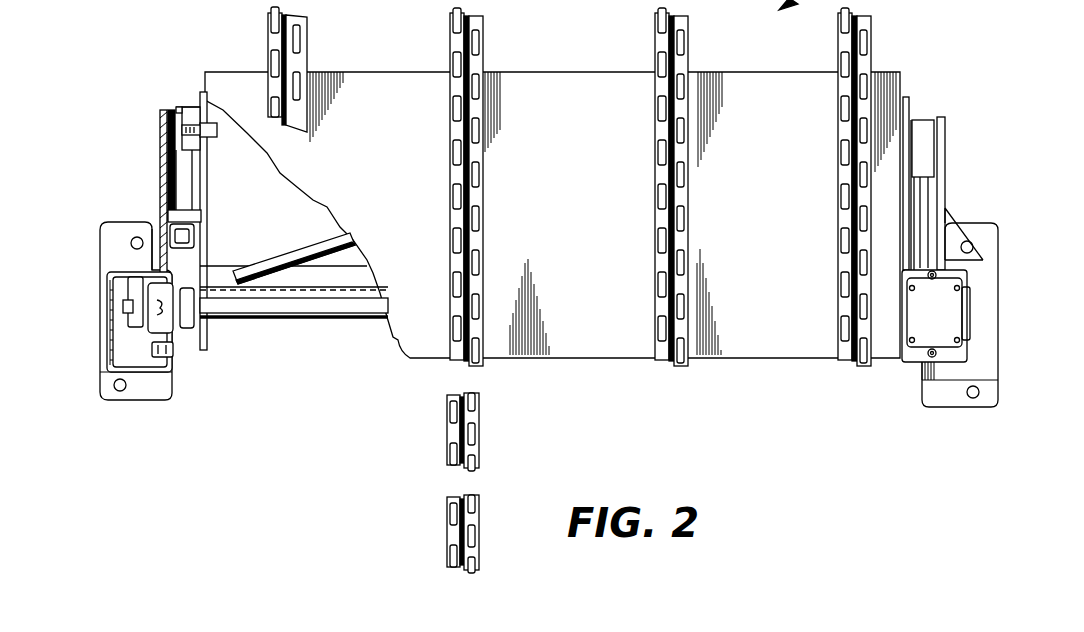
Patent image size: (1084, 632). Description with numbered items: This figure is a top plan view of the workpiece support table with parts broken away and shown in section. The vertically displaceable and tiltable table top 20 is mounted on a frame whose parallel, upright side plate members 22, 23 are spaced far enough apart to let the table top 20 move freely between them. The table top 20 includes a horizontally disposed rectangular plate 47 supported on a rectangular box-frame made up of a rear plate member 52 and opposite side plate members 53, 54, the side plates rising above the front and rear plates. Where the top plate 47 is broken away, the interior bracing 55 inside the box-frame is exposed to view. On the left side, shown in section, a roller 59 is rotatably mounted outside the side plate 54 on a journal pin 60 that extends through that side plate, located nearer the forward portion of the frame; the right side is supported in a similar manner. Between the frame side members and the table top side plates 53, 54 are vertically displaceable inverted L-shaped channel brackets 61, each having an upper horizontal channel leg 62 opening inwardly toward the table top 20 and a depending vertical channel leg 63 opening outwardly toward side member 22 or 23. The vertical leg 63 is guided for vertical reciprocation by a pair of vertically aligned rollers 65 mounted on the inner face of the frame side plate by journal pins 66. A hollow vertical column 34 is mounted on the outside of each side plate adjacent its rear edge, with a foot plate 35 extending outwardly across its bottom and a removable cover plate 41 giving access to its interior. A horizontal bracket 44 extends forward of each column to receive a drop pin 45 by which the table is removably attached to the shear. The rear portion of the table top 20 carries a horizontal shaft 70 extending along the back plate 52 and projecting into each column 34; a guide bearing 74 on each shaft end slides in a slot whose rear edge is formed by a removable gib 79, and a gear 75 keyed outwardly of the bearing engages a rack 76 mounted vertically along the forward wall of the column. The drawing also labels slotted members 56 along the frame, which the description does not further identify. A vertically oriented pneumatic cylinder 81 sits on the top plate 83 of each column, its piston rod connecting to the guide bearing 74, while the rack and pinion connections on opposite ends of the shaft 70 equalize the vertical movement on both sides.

The table top 20 is at (560, 88).
The side plate member 22 is at (946, 145).
The side plate member 23 is at (160, 148).
The hollow vertical column 34 is at (120, 364).
The foot plate 35 is at (932, 395).
The cover plate 41 is at (107, 308).
The horizontal bracket 44 is at (948, 215).
The drop pin 45 is at (970, 246).
The rectangular plate 47 is at (574, 206).
The rear plate member 52 is at (330, 297).
The side plate member 53 is at (910, 105).
The side plate member 54 is at (208, 185).
The interior bracing 55 is at (295, 258).
The hinge column 56 is at (308, 40).
The roller 59 is at (176, 107).
The journal pin 60 is at (218, 135).
The inverted L-shaped channel bracket 61 is at (178, 183).
The upper horizontal channel leg 62 is at (186, 107).
The vertical channel leg 63 is at (201, 243).
The roller 65 is at (201, 218).
The journal pin 66 is at (157, 230).
The shaft 70 is at (258, 322).
The guide bearing 74 is at (170, 327).
The gear 75 is at (130, 322).
The rack 76 is at (140, 283).
The gib 79 is at (176, 348).
The pneumatic cylinder 81 is at (943, 318).
The top plate 83 is at (912, 357).